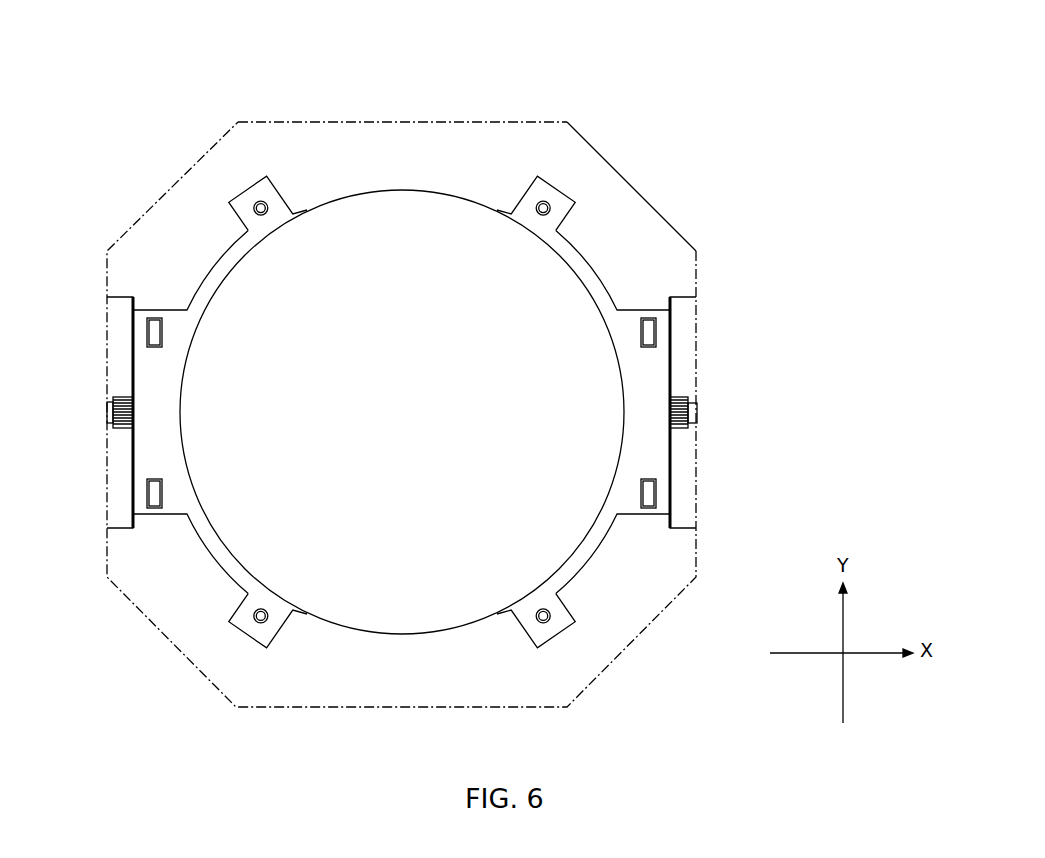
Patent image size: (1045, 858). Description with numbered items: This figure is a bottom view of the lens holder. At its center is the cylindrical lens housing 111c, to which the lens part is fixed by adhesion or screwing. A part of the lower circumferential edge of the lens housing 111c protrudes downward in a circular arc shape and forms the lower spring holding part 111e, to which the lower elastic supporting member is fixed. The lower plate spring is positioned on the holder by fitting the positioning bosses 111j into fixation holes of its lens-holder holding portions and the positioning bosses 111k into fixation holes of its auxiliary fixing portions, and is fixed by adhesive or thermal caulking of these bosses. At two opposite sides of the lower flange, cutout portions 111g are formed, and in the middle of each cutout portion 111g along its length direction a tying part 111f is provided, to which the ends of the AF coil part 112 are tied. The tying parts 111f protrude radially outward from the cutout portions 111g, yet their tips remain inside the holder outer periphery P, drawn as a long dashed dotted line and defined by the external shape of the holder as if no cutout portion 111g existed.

The holder outer periphery P is at (373, 121).
The lens housing 111c is at (648, 205).
The lower spring holding part 111e is at (597, 553).
The positioning bosses 111j is at (541, 201).
The cutout portions 111g is at (672, 328).
The positioning bosses 111k is at (147, 338).
The tying parts 111f is at (409, 398).
The AF coil part 112 is at (676, 397).